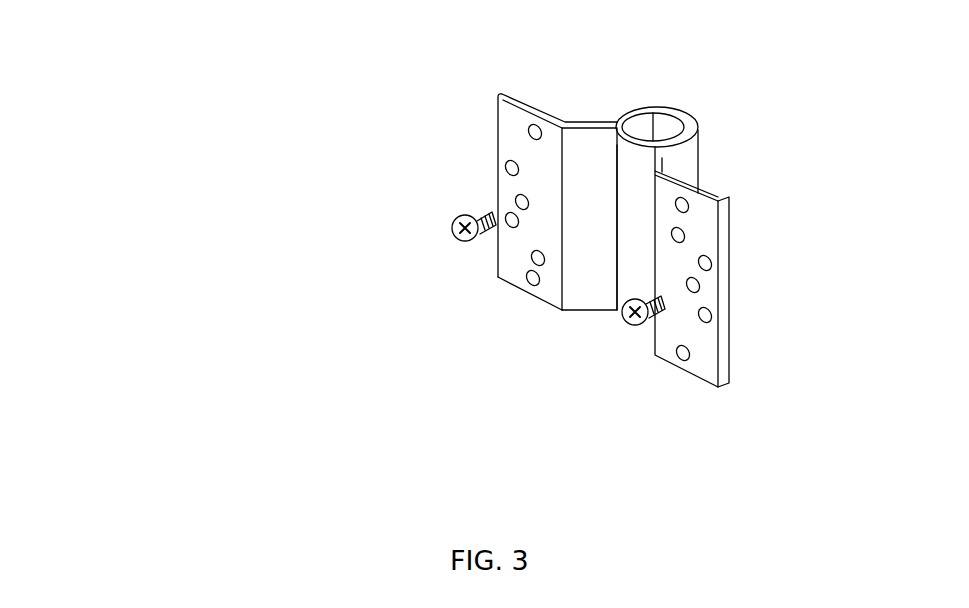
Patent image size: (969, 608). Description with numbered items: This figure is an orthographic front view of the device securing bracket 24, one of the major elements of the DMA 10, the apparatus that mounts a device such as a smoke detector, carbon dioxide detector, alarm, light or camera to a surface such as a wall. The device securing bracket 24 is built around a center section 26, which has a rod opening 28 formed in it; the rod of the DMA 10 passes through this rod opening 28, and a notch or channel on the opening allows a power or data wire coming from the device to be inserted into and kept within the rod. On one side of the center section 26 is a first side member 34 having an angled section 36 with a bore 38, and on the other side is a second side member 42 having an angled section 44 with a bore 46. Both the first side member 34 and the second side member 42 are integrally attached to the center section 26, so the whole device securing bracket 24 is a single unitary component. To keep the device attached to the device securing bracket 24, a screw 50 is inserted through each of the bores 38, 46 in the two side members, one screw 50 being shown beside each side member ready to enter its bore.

The DMA 10 is at (138, 108).
The device securing bracket 24 is at (500, 317).
The center section 26 is at (634, 243).
The rod opening 28 is at (666, 128).
The first side member 34 is at (508, 132).
The angled section 36 is at (591, 124).
The bore 38 is at (503, 169).
The second side member 42 is at (698, 225).
The angled section 44 is at (660, 158).
The bore 46 is at (710, 317).
The screw 50 is at (450, 233).